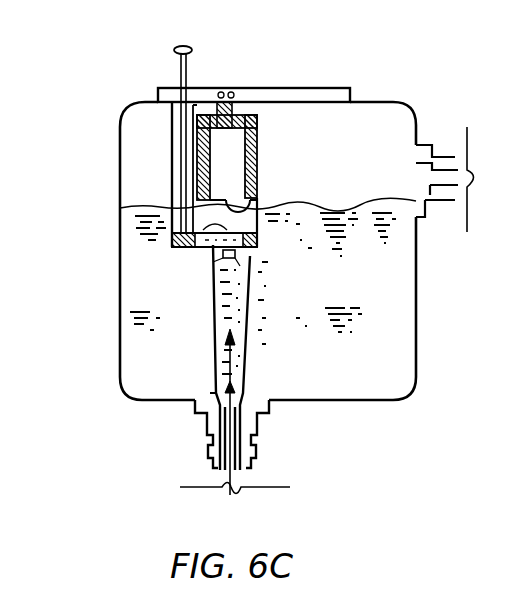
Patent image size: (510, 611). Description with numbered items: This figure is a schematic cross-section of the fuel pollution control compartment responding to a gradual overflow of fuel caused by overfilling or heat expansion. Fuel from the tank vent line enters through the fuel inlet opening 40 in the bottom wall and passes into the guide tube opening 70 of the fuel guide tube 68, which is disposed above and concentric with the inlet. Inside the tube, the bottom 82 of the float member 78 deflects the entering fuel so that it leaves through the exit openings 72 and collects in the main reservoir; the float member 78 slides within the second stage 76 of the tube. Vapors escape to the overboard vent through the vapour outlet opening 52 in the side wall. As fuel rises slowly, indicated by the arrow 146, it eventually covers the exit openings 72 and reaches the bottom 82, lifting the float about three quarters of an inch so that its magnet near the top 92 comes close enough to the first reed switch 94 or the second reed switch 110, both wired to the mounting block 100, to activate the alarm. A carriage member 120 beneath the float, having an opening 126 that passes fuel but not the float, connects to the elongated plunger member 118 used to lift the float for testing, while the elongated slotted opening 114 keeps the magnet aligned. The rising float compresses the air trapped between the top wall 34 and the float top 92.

The top wall 34 is at (320, 104).
The mounting block 100 is at (349, 90).
The second reed switch 110 is at (217, 88).
The first reed switch 94 is at (223, 88).
The top of float member 92 is at (240, 94).
The elongated plunger member 118 is at (172, 153).
The elongated slotted opening 114 is at (172, 196).
The float member 78 is at (260, 128).
The second stage 76 is at (252, 200).
The bottom of float member 82 is at (262, 207).
The opening 126 is at (190, 224).
The carriage member 120 is at (176, 247).
The exit openings 72 is at (225, 258).
The fuel guide tube 68 is at (250, 298).
The arrow 146 is at (238, 356).
The fuel inlet opening 40 is at (244, 398).
The guide tube opening 70 is at (217, 393).
The vapour outlet opening 52 is at (414, 162).